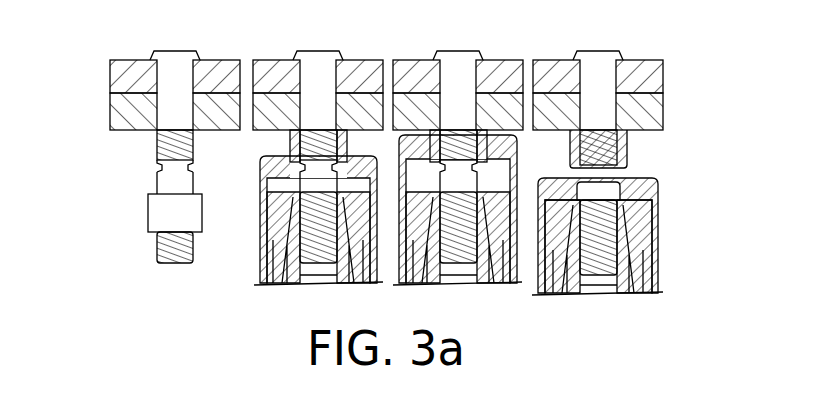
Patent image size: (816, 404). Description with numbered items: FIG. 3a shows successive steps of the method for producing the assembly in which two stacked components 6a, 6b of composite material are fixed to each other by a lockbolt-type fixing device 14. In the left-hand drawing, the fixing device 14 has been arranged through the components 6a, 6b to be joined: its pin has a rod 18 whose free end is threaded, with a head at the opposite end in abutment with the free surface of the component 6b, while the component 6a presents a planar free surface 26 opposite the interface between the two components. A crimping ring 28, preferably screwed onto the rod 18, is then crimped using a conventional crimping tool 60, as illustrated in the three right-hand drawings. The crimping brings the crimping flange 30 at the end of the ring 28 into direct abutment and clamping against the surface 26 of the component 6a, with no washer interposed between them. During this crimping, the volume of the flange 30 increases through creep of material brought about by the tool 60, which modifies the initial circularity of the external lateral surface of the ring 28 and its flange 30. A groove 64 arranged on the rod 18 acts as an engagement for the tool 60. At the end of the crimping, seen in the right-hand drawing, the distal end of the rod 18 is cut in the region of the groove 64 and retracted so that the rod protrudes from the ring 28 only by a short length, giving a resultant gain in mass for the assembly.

The component 6a is at (110, 111).
The component 6b is at (110, 79).
The fixing device 14 is at (137, 161).
The rod 18 is at (606, 80).
The free surface 26 is at (272, 131).
The crimping ring 28 is at (358, 156).
The crimping flange 30 is at (478, 134).
The crimping tool 60 is at (251, 268).
The groove 64 is at (153, 173).